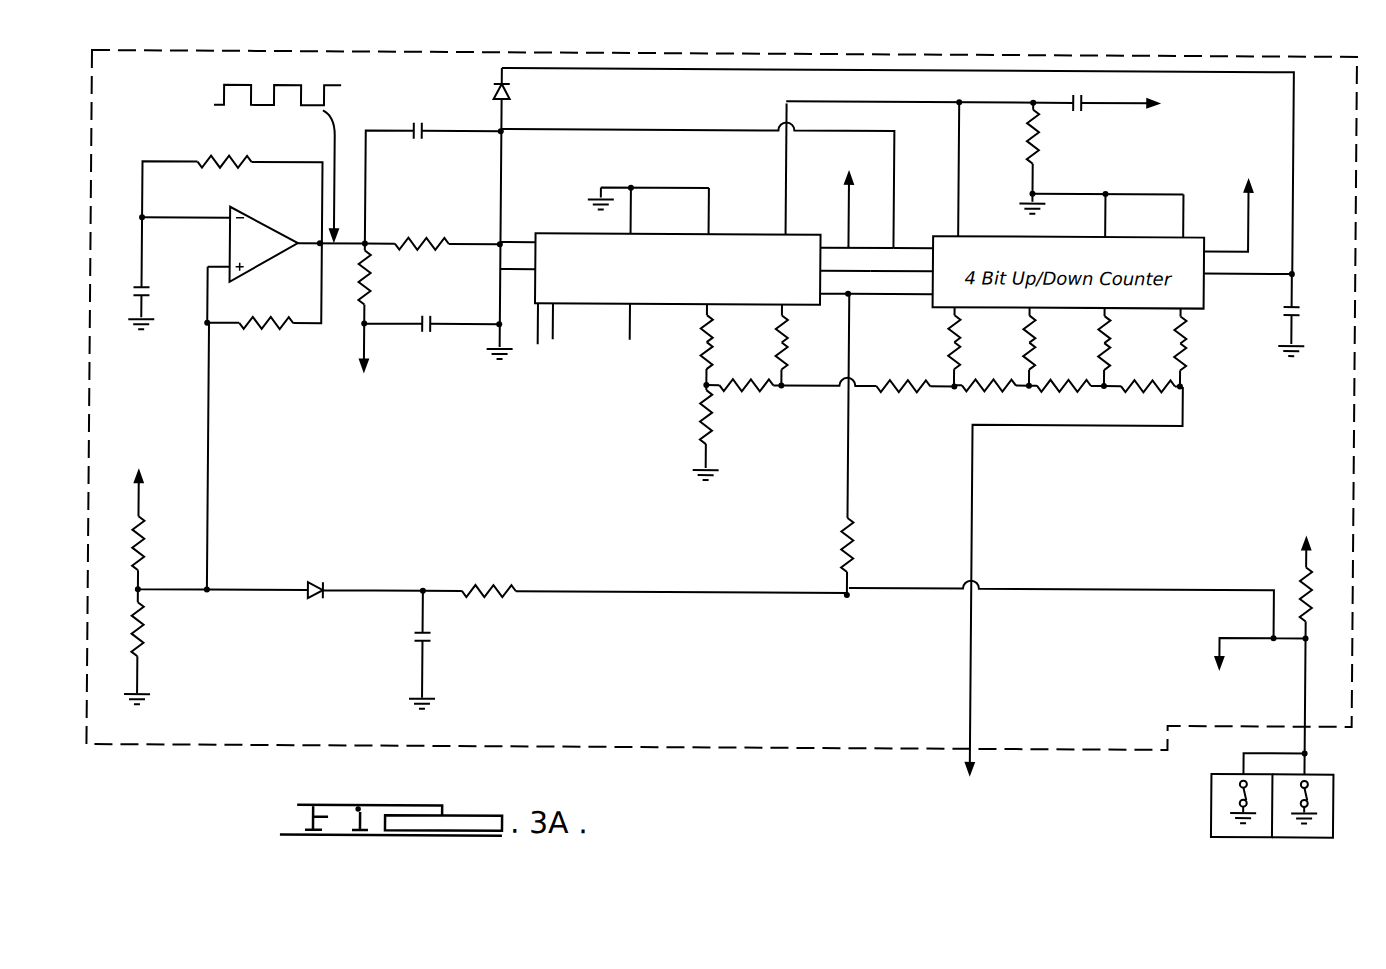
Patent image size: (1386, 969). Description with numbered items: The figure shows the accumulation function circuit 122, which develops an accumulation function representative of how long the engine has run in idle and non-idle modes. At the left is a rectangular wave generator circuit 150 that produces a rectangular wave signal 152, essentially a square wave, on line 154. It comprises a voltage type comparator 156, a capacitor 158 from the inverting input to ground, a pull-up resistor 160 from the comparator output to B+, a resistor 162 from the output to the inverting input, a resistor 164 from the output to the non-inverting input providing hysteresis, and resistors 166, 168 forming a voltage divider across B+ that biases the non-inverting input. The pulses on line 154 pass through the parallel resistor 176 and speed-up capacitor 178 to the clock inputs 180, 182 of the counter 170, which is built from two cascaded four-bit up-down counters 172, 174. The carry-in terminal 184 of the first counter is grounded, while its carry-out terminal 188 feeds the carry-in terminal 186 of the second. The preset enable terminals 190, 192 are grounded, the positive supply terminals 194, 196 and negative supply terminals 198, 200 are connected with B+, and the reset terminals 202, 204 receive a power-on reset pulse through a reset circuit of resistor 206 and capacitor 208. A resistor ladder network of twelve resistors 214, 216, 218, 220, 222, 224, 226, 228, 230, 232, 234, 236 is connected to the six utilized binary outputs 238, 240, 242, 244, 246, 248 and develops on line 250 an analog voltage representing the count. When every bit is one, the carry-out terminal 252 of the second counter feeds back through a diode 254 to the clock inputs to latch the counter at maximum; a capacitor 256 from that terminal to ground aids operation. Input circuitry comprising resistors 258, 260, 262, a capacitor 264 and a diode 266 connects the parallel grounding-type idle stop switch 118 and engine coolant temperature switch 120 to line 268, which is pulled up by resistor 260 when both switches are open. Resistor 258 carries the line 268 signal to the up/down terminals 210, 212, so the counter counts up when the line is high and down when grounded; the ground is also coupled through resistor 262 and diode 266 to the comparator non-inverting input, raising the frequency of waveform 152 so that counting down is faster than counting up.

The accumulation function circuit 122 is at (560, 14).
The rectangular wave generator circuit 150 is at (150, 142).
The rectangular wave signal 152 is at (208, 98).
The line 154 is at (346, 240).
The voltage type comparator 156 is at (263, 232).
The capacitor 158 is at (150, 290).
The resistor 160 is at (372, 290).
The resistor 162 is at (218, 160).
The resistor 164 is at (262, 330).
The resistor 166 is at (146, 545).
The resistor 168 is at (148, 640).
The counter 170 is at (545, 208).
The 4-bit up-down counter 172 is at (536, 332).
The 4-bit up-down counter 174 is at (926, 275).
The resistor 176 is at (412, 240).
The capacitor 178 is at (416, 125).
The clock input 180 is at (522, 242).
The clock input 182 is at (896, 235).
The carry-in terminal 184 is at (522, 270).
The carry-in terminal 186 is at (920, 262).
The carry-out terminal 188 is at (826, 269).
The preset enable terminal 190 is at (633, 228).
The preset enable terminal 192 is at (1104, 232).
The positive power supply terminal 194 is at (828, 246).
The positive power supply terminal 196 is at (1212, 249).
The negative supply terminal 198 is at (710, 230).
The negative supply terminal 200 is at (1185, 230).
The reset terminal 202 is at (786, 228).
The reset terminal 204 is at (960, 230).
The resistor 206 is at (1040, 147).
The capacitor 208 is at (1080, 110).
The up/down terminal 210 is at (822, 306).
The up/down terminal 212 is at (915, 296).
The resistor 214 is at (702, 345).
The resistor 216 is at (702, 420).
The resistor 218 is at (742, 386).
The resistor 220 is at (786, 352).
The resistor 222 is at (903, 386).
The resistor 224 is at (950, 355).
The resistor 226 is at (1000, 389).
The resistor 228 is at (1025, 355).
The resistor 230 is at (1072, 389).
The resistor 232 is at (1100, 355).
The resistor 234 is at (1142, 389).
The resistor 236 is at (1186, 355).
The binary output 238 is at (703, 312).
The binary output 240 is at (778, 312).
The binary output 242 is at (960, 315).
The binary output 244 is at (1035, 315).
The binary output 246 is at (1110, 315).
The binary output 248 is at (1186, 315).
The line 250 is at (973, 522).
The carry-out terminal 252 is at (1206, 289).
The diode 254 is at (512, 94).
The capacitor 256 is at (1300, 314).
The resistor 258 is at (845, 538).
The resistor 260 is at (1300, 590).
The resistor 262 is at (485, 588).
The capacitor 264 is at (434, 642).
The diode 266 is at (316, 580).
The line 268 is at (1131, 589).
The idle stop switch 118 is at (1212, 826).
The engine coolant temperature switch 120 is at (1305, 838).